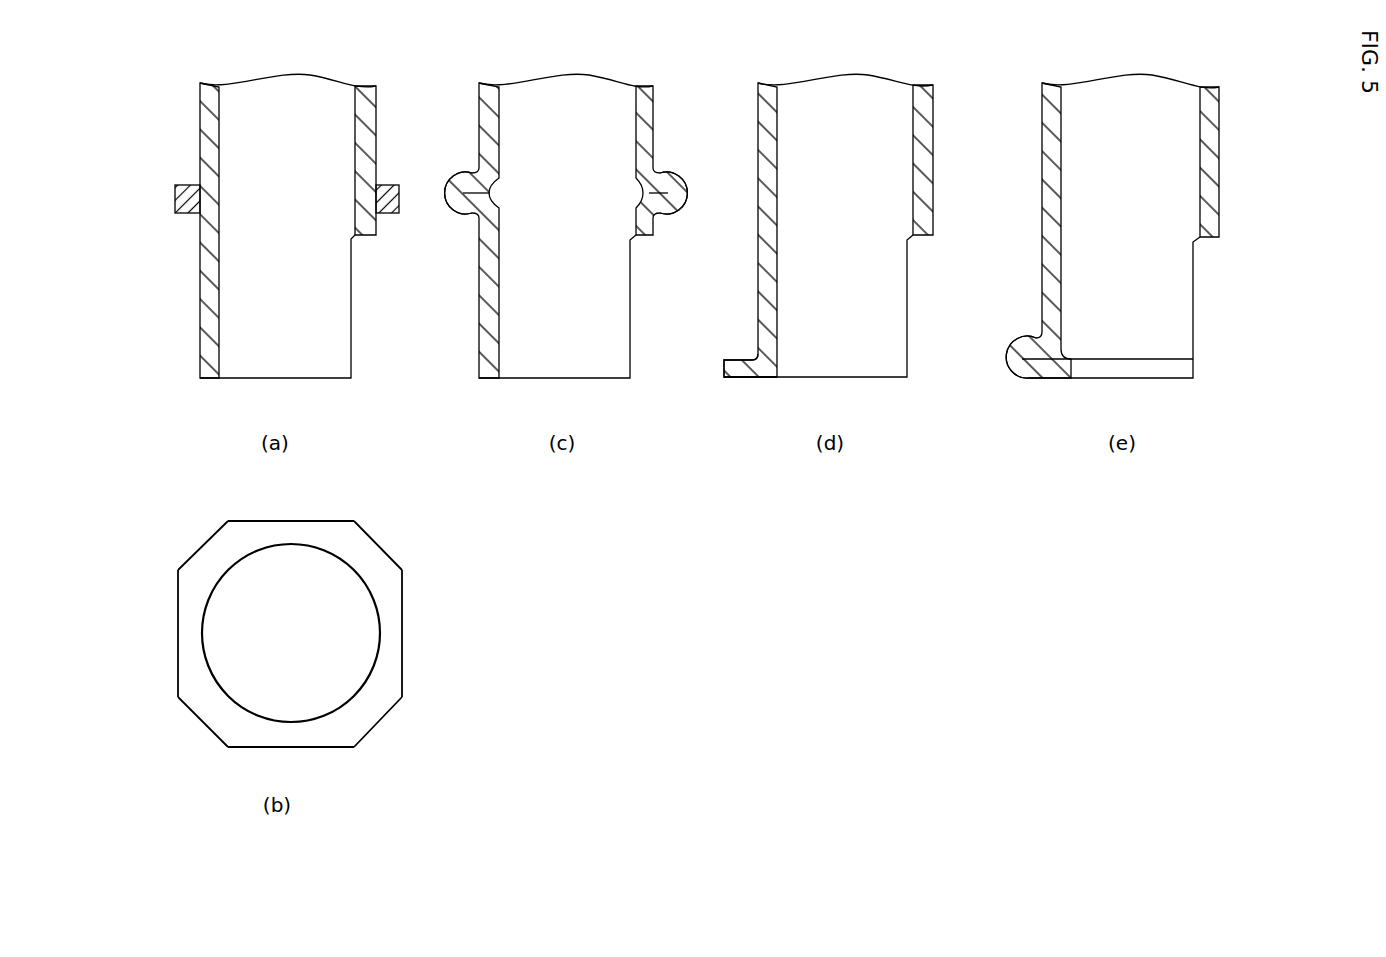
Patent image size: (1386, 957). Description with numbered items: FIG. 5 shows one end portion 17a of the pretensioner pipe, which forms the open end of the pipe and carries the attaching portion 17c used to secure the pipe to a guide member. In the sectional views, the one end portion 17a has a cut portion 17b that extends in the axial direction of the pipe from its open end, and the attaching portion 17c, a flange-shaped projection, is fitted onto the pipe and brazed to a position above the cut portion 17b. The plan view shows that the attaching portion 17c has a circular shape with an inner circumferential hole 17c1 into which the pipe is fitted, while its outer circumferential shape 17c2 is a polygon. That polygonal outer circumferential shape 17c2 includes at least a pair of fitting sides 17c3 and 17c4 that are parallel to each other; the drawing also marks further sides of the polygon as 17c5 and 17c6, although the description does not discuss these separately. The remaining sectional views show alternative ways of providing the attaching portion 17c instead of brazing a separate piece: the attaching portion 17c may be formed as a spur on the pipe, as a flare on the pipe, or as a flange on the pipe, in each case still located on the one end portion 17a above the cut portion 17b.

The one end portion 17a is at (190, 105).
The cut portion 17b is at (365, 240).
The attaching portion 17c is at (566, 459).
The inner circumferential hole 17c1 is at (204, 622).
The outer circumferential shape 17c2 is at (308, 516).
The fitting side 17c3 is at (405, 638).
The fitting side 17c4 is at (177, 638).
The upper surface of flange 17c5 is at (286, 524).
The bottom flat face of flange 17c6 is at (310, 737).